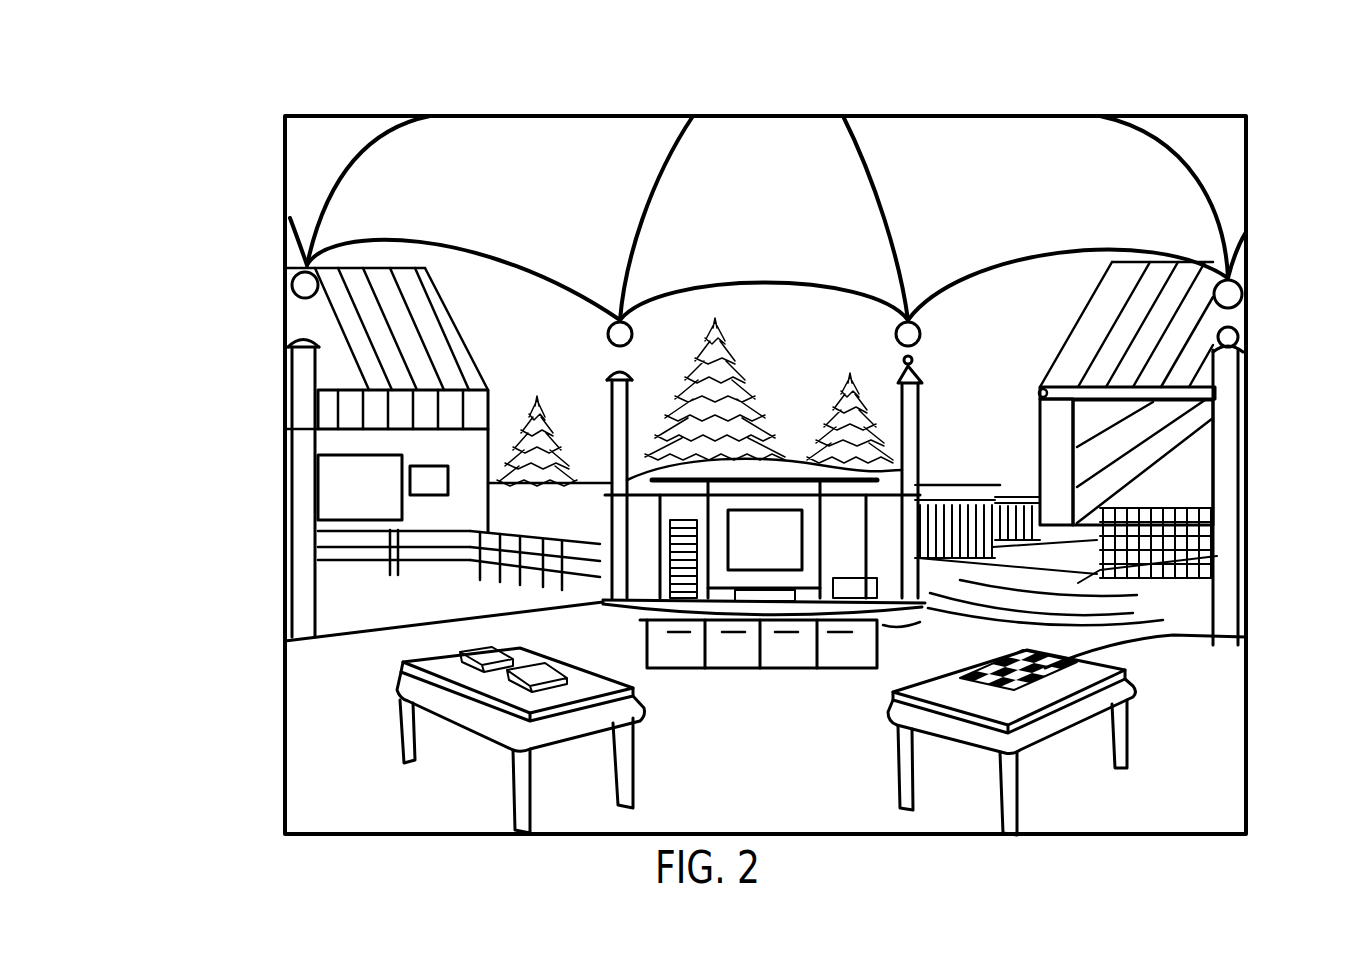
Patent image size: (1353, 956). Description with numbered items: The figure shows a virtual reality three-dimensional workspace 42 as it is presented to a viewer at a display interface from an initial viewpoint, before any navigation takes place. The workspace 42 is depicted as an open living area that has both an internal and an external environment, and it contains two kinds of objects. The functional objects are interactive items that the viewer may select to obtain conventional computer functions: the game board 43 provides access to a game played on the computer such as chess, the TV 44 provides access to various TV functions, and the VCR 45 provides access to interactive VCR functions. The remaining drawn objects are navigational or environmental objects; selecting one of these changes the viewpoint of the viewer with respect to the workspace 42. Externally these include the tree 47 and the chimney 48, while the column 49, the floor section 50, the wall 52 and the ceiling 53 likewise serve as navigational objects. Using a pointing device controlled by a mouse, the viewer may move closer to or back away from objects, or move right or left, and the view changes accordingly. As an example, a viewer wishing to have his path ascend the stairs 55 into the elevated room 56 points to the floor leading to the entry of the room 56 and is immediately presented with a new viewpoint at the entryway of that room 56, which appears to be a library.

The workspace 42 is at (303, 397).
The game board 43 is at (1173, 636).
The TV 44 is at (762, 503).
The VCR 45 is at (765, 600).
The tree 47 is at (703, 372).
The chimney 48 is at (985, 408).
The column 49 is at (922, 408).
The floor section 50 is at (363, 617).
The wall 52 is at (350, 439).
The ceiling 53 is at (950, 158).
The stairs 55 is at (1080, 580).
The elevated room 56 is at (1100, 536).